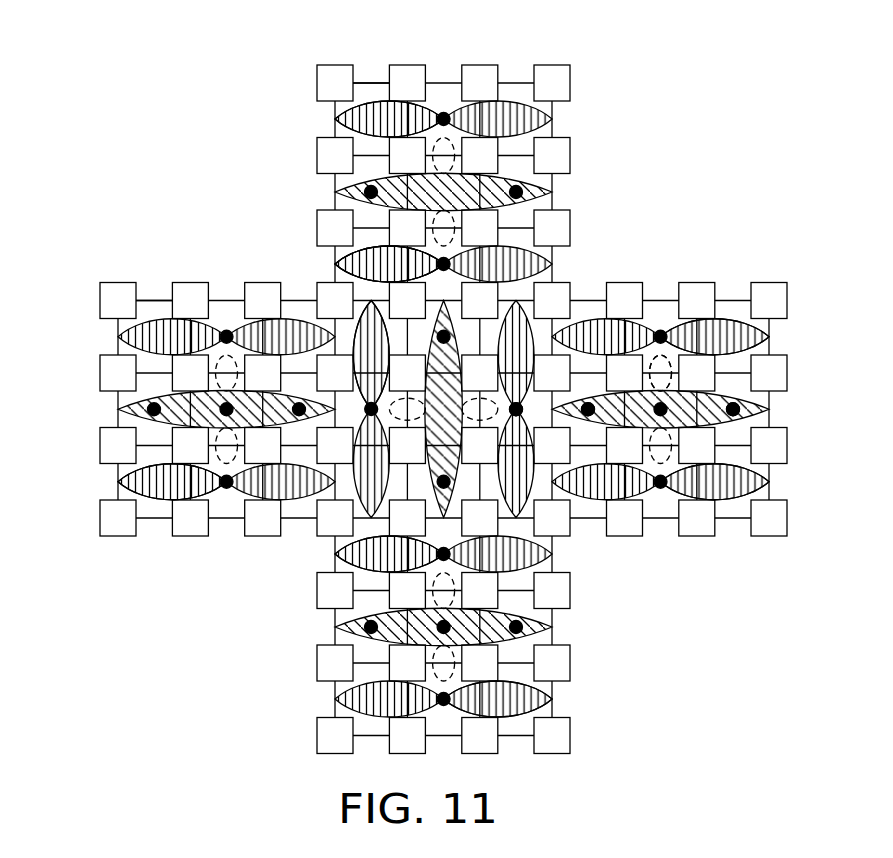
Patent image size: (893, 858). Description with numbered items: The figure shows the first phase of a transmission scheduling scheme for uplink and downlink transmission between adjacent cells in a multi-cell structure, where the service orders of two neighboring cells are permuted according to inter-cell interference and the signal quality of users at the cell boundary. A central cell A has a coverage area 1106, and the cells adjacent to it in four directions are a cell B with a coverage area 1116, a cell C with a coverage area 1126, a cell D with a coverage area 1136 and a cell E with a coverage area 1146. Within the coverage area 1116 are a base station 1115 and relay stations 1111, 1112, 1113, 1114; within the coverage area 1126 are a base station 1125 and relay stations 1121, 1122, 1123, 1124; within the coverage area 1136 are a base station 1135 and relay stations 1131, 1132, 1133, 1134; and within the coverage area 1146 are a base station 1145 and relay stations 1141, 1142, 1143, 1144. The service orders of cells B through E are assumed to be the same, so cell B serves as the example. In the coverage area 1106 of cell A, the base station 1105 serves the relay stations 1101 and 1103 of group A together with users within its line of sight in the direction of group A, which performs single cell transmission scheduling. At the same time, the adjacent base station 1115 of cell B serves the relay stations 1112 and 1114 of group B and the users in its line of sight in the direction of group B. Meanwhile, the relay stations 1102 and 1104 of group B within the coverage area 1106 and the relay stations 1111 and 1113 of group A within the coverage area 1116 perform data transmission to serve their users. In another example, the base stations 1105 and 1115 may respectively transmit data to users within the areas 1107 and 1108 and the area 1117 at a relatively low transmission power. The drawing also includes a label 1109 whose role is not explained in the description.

The relay station 1101 is at (444, 330).
The relay station 1102 is at (522, 415).
The relay station 1103 is at (444, 488).
The relay station 1104 is at (371, 415).
The base station 1105 is at (383, 542).
The coverage area 1106 is at (371, 400).
The area 1107 is at (330, 256).
The area 1108 is at (522, 405).
The coupling region 1109 is at (340, 258).
The relay station 1111 is at (661, 333).
The relay station 1112 is at (738, 410).
The relay station 1113 is at (661, 490).
The relay station 1114 is at (589, 402).
The base station 1115 is at (700, 472).
The coverage area 1116 is at (673, 332).
The area 1117 is at (664, 356).
The relay station 1121 is at (522, 625).
The relay station 1122 is at (450, 553).
The relay station 1123 is at (437, 698).
The relay station 1124 is at (365, 624).
The base station 1125 is at (437, 624).
The coverage area 1126 is at (553, 698).
The relay station 1131 is at (220, 336).
The relay station 1132 is at (300, 416).
The relay station 1133 is at (220, 480).
The relay station 1134 is at (220, 409).
The base station 1135 is at (220, 480).
The coverage area 1136 is at (152, 298).
The relay station 1141 is at (437, 118).
The relay station 1142 is at (516, 185).
The relay station 1143 is at (448, 264).
The relay station 1144 is at (365, 191).
The base station 1145 is at (345, 132).
The coverage area 1146 is at (368, 82).